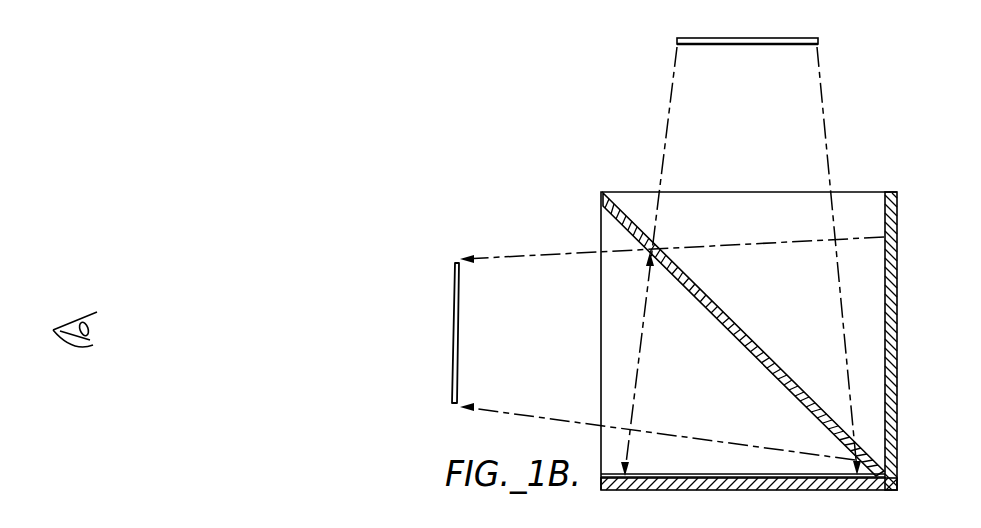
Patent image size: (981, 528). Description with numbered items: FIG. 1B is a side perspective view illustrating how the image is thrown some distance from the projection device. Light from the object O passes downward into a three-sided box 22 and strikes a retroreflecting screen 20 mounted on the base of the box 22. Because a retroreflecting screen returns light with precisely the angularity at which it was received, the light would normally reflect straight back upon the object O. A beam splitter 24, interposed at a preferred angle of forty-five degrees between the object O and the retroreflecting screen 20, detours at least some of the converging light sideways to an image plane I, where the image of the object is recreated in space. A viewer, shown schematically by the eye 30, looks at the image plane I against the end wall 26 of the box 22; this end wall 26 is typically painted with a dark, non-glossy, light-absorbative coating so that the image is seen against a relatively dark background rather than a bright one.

The object O is at (819, 38).
The image plane I is at (451, 376).
The eye 30 is at (62, 322).
The beam splitter 24 is at (622, 197).
The end wall 26 is at (883, 208).
The retroreflecting screen 20 is at (690, 475).
The three-sided box 22 is at (771, 491).